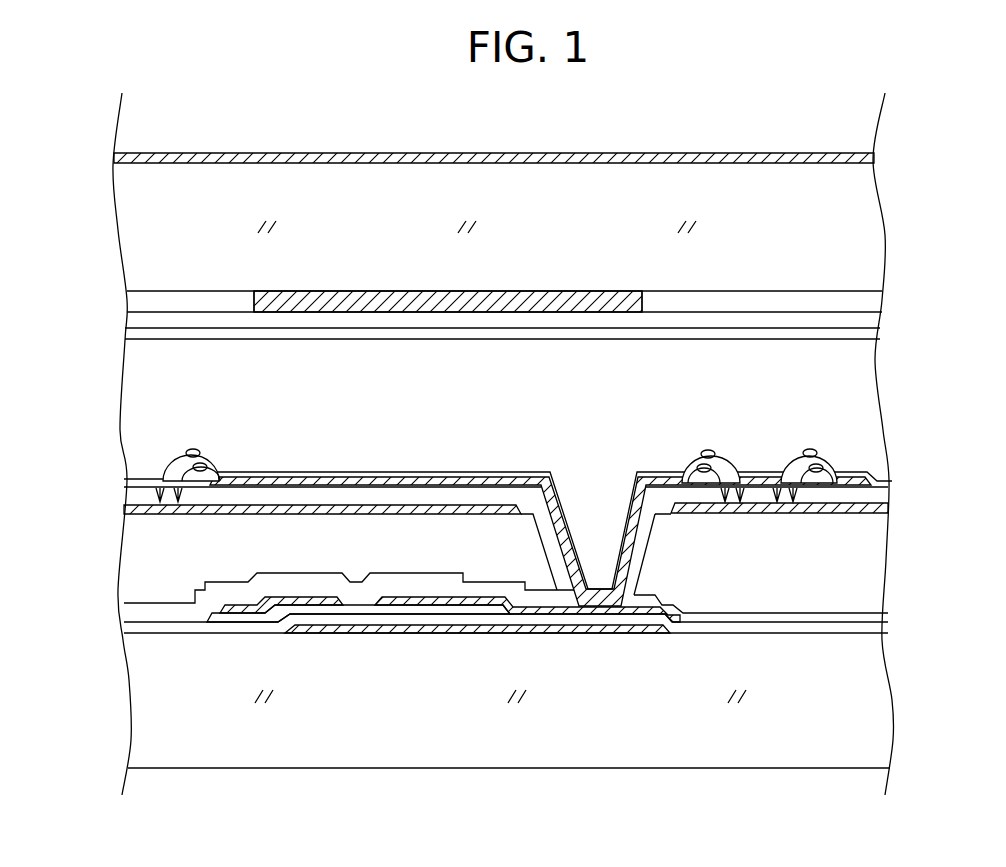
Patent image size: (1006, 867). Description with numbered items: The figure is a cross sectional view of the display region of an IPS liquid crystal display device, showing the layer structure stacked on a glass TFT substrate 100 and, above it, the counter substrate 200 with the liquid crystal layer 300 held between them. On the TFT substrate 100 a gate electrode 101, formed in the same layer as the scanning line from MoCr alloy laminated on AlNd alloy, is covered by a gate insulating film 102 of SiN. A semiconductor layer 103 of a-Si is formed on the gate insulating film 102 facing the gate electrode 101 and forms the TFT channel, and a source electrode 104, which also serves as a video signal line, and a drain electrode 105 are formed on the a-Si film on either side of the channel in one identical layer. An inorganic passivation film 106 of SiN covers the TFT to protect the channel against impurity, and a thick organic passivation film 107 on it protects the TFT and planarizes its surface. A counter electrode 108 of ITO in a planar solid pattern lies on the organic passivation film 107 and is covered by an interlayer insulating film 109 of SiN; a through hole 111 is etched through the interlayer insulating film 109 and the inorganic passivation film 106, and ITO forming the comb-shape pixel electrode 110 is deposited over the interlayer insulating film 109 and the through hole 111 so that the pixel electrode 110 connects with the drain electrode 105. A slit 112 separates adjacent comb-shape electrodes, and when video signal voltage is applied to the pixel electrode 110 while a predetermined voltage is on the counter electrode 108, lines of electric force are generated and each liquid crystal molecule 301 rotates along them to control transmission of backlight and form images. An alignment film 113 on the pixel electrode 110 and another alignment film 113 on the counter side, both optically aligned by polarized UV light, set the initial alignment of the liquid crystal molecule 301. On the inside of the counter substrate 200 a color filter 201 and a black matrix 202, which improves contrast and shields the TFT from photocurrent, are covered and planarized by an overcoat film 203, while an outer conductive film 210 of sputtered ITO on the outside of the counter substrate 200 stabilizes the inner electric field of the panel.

The TFT substrate 100 is at (201, 732).
The gate electrode 101 is at (365, 627).
The gate insulating film 102 is at (137, 633).
The semiconductor layer 103 is at (437, 609).
The source electrode 104 is at (305, 603).
The drain electrode 105 is at (490, 601).
The inorganic passivation film 106 is at (137, 611).
The organic passivation film 107 is at (137, 558).
The counter electrode 108 is at (137, 510).
The interlayer insulating film 109 is at (137, 493).
The pixel electrode 110 is at (467, 478).
The through hole 111 is at (597, 600).
The slit 112 is at (755, 483).
The alignment film 113 is at (858, 340).
The counter substrate 200 is at (858, 236).
The color filter 201 is at (130, 302).
The black matrix 202 is at (602, 300).
The overcoat film 203 is at (858, 324).
The outer conductive film 210 is at (778, 153).
The liquid crystal layer 300 is at (858, 393).
The liquid crystal molecule 301 is at (810, 449).